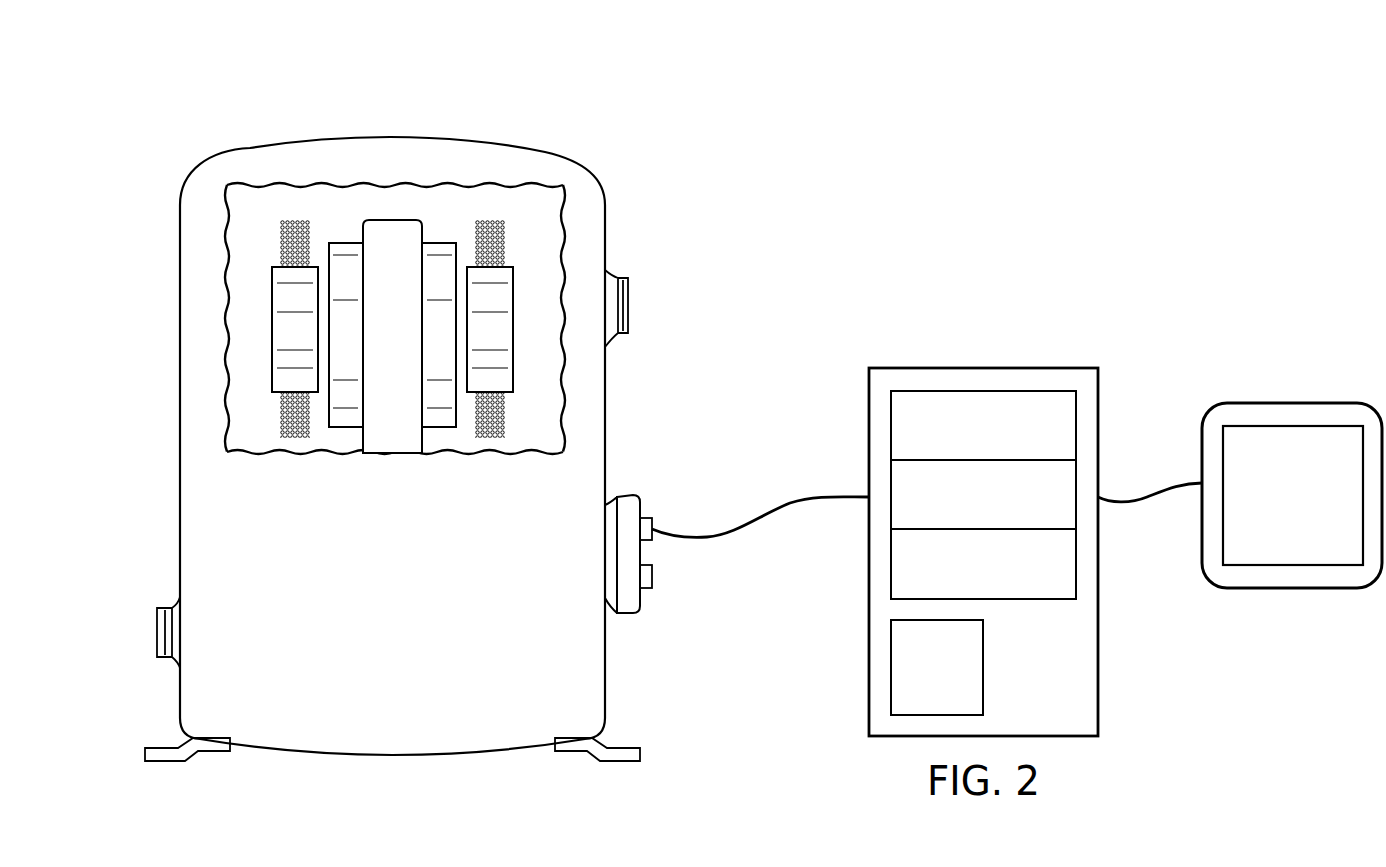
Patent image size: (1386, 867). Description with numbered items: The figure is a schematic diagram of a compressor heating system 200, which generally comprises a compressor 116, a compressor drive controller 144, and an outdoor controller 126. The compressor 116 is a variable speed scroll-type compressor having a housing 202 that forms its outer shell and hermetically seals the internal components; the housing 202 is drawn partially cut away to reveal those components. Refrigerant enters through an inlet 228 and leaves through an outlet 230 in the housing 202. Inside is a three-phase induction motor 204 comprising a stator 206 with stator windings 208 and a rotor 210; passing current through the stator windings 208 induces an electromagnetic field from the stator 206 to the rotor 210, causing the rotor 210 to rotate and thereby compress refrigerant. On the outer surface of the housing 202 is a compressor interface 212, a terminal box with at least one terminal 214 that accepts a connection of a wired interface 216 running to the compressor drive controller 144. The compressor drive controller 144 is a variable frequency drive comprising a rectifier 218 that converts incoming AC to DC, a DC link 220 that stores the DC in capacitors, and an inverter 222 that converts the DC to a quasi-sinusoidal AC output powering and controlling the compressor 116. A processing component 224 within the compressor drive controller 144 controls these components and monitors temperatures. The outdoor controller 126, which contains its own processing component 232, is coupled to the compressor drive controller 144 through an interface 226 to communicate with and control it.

The compressor 116 is at (290, 146).
The outdoor controller 126 is at (1293, 402).
The compressor drive controller 144 is at (955, 364).
The compressor heating system 200 is at (929, 195).
The housing 202 is at (180, 460).
The motor 204 is at (522, 285).
The stator 206 is at (515, 375).
The stator windings 208 is at (507, 245).
The rotor 210 is at (440, 243).
The compressor interface 212 is at (625, 612).
The terminal 214 is at (647, 517).
The wired interface 216 is at (777, 515).
The rectifier 218 is at (1005, 443).
The DC link 220 is at (1005, 513).
The inverter 222 is at (1005, 581).
The processing component 224 is at (959, 684).
The interface 226 is at (1130, 503).
The inlet 228 is at (630, 307).
The outlet 230 is at (157, 635).
The processing component 232 is at (1315, 513).